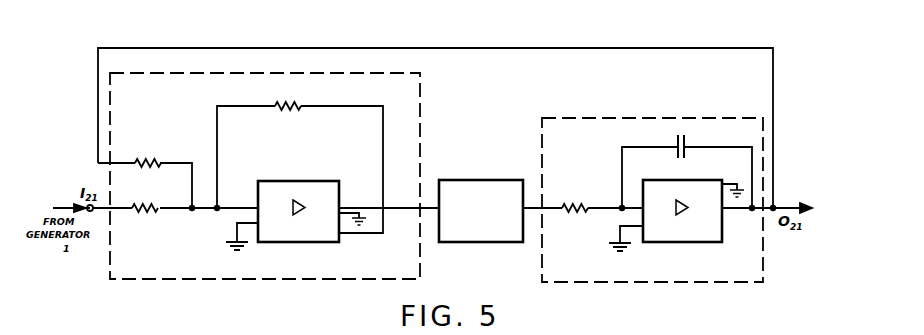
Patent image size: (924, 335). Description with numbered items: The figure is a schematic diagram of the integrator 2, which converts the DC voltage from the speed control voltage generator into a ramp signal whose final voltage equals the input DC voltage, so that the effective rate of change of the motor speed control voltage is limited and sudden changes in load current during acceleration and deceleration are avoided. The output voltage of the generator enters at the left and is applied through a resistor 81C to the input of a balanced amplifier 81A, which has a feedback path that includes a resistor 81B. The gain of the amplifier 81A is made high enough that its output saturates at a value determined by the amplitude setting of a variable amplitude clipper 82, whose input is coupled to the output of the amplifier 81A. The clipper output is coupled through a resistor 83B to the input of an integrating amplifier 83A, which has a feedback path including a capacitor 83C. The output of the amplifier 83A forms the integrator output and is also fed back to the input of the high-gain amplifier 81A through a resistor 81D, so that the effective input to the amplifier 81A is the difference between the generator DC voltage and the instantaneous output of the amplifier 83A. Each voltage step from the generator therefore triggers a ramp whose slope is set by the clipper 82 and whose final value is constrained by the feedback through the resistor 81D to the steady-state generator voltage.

The integrator 2 is at (601, 47).
The balanced amplifier 81A is at (283, 242).
The resistor 81B is at (282, 104).
The resistor 81C is at (146, 213).
The resistor 81D is at (143, 160).
The variable amplitude clipper 82 is at (467, 179).
The integrating amplifier 83A is at (670, 242).
The resistor 83B is at (577, 214).
The capacitor 83C is at (675, 154).